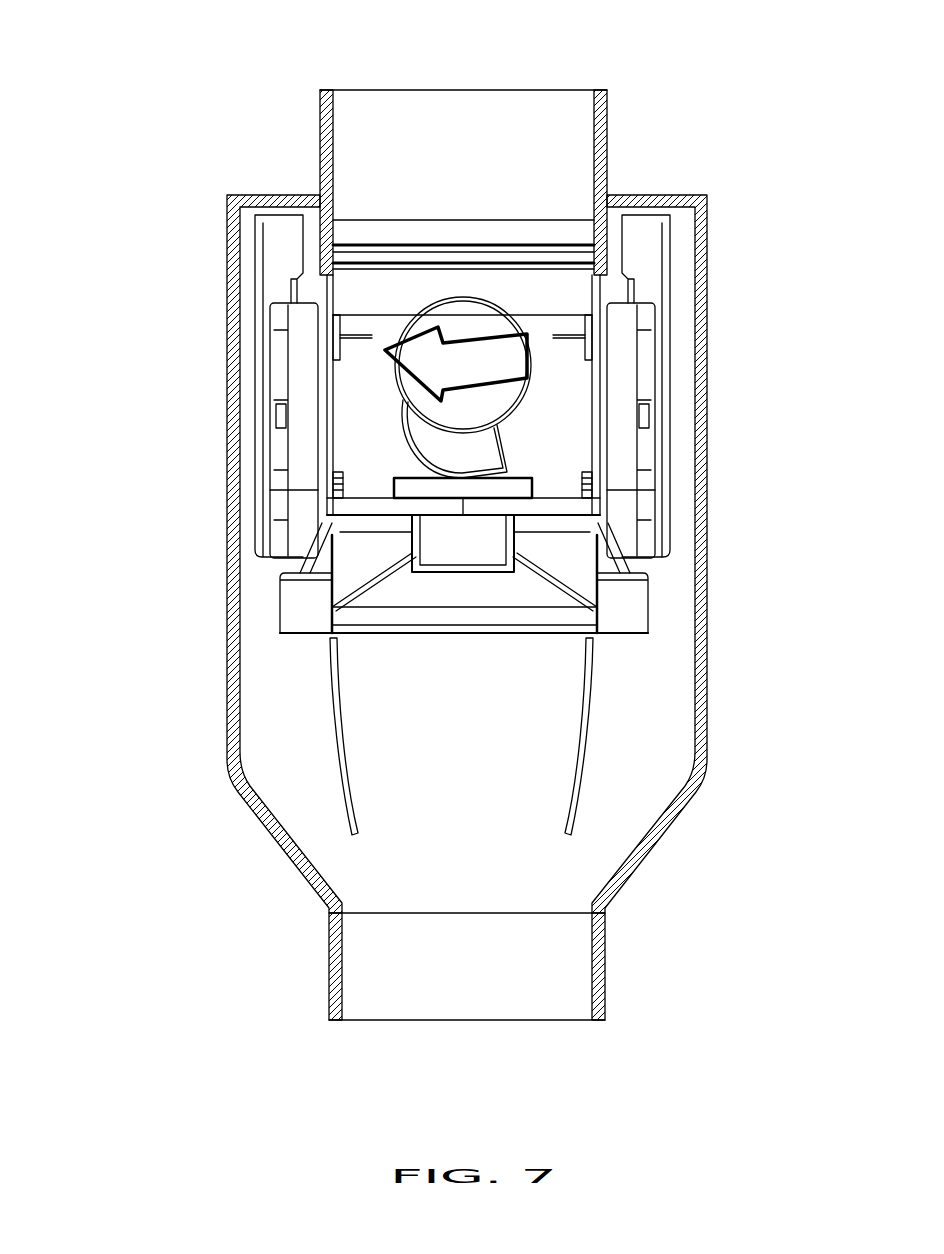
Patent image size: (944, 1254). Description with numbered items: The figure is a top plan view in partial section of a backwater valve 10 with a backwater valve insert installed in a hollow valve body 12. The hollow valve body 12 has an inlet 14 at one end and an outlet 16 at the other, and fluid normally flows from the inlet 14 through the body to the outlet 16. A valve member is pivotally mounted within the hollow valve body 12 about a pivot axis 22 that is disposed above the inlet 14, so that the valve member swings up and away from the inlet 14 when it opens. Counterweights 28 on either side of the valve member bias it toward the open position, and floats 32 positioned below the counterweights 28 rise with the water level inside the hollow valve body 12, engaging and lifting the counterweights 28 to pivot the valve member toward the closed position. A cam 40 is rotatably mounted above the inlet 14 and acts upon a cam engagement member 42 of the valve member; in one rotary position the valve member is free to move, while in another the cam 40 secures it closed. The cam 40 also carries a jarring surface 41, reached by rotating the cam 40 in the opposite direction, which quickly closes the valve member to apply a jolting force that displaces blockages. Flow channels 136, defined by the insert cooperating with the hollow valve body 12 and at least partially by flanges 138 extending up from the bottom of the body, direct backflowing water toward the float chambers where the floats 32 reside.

The backwater valve 10 is at (142, 187).
The hollow valve body 12 is at (700, 628).
The inlet 14 is at (358, 107).
The outlet 16 is at (410, 960).
The pivot axis 22 is at (330, 518).
The counterweights 28 is at (295, 432).
The floats 32 is at (280, 270).
The cam 40 is at (579, 246).
The jarring surface 41 is at (388, 345).
The cam engagement member 42 is at (470, 495).
The flow channels 136 is at (297, 696).
The flanges 138 is at (335, 766).